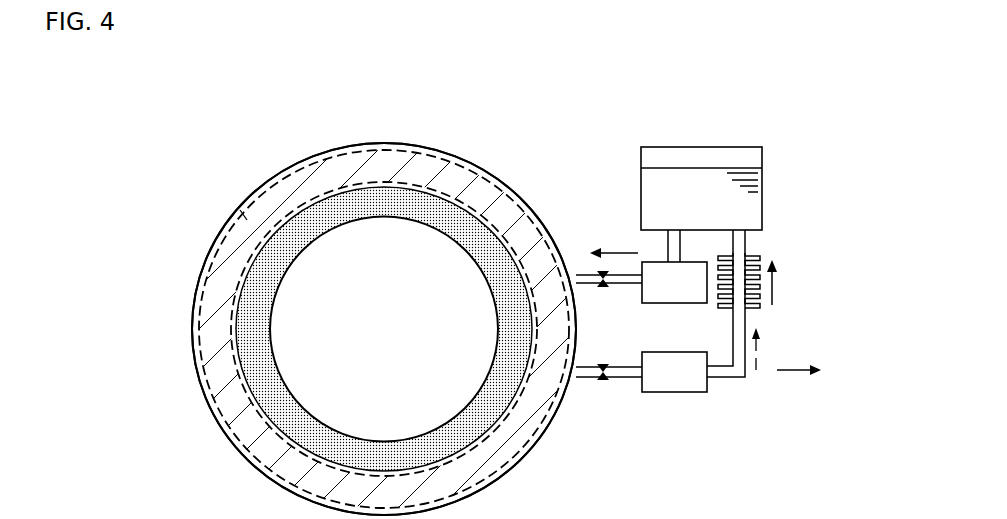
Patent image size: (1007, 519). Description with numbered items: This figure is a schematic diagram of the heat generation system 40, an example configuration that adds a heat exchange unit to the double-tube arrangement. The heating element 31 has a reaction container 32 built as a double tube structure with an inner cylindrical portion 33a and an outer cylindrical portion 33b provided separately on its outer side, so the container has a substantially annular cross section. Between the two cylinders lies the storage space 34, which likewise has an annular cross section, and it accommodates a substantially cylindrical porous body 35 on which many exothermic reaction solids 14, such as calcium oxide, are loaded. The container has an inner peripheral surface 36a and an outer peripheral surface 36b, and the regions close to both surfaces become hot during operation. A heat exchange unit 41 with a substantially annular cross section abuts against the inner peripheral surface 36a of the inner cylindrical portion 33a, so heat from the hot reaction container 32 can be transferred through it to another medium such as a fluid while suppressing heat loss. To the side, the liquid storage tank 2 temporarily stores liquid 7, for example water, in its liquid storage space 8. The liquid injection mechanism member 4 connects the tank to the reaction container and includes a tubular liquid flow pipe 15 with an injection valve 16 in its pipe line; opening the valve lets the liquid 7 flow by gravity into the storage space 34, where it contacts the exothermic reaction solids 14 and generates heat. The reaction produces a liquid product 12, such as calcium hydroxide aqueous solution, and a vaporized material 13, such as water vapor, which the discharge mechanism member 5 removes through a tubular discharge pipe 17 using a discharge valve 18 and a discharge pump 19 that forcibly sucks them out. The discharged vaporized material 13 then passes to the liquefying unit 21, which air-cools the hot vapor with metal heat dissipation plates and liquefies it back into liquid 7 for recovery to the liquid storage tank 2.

The heat generation system 40 is at (254, 98).
The reaction container 32 is at (412, 147).
The outer cylindrical portion 33b is at (340, 147).
The outer peripheral surface 36b is at (384, 329).
The heating element 31 is at (492, 162).
The storage space 34 is at (528, 204).
The inner cylindrical portion 33a is at (389, 190).
The inner peripheral surface 36a is at (384, 329).
The heat exchange unit 41 is at (263, 343).
The porous body 35 is at (185, 205).
The exothermic reaction solid 14 is at (243, 215).
The liquid storage space 8 is at (739, 162).
The liquid storage tank 2 is at (788, 172).
The liquid 7 is at (617, 250).
The liquefying unit 21 is at (788, 262).
The discharge pipe 17 is at (720, 380).
The vaporized material 13 is at (771, 332).
The liquid product 12 is at (795, 375).
The liquid flow pipe 15 is at (672, 288).
The discharge pump 19 is at (665, 393).
The liquid injection mechanism member 4 is at (600, 208).
The injection valve 16 is at (603, 289).
The discharge mechanism member 5 is at (653, 440).
The discharge valve 18 is at (604, 382).